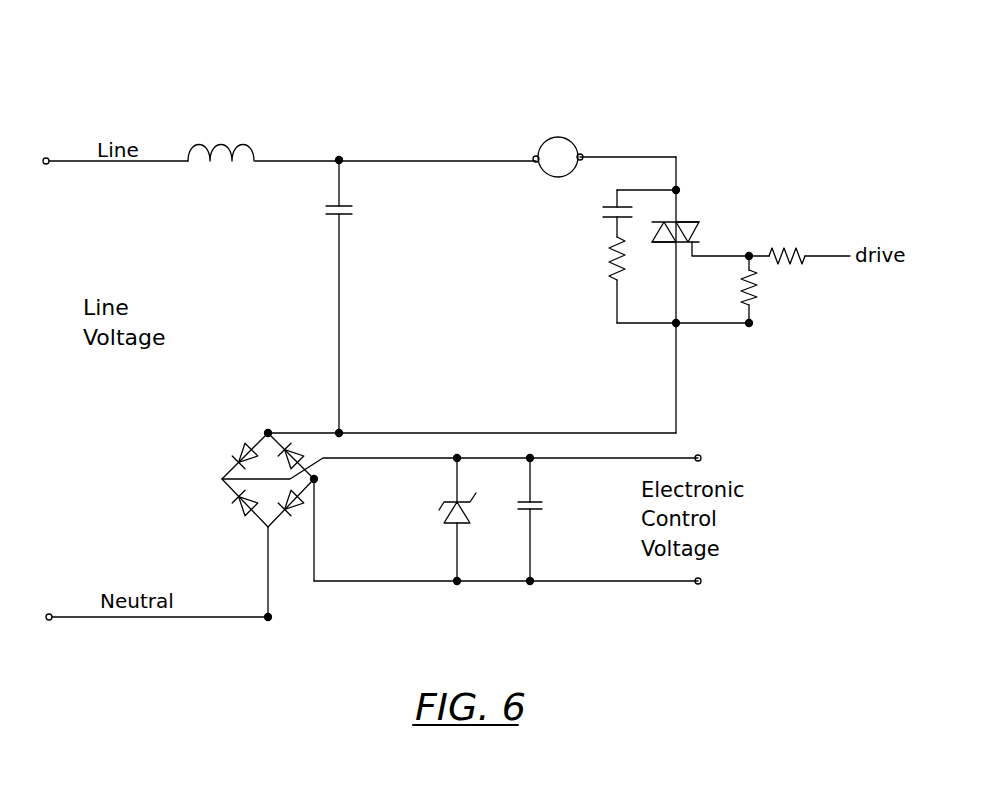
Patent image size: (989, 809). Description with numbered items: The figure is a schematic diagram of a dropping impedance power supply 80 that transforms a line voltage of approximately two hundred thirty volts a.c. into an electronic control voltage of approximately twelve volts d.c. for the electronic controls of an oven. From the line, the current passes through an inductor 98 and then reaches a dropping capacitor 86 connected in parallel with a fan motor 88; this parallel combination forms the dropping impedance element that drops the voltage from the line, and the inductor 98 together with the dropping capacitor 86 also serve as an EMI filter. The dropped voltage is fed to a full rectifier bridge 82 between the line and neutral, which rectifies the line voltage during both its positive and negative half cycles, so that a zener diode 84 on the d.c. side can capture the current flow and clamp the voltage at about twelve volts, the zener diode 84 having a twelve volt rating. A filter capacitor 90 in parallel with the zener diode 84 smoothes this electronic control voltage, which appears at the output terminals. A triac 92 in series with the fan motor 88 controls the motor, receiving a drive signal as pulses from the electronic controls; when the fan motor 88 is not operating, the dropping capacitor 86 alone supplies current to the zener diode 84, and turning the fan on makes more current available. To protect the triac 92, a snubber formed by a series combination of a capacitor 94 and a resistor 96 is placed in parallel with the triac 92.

The dropping impedance power supply 80 is at (623, 47).
The full rectifier bridge 82 is at (267, 433).
The zener diode 84 is at (460, 525).
The dropping capacitor 86 is at (340, 204).
The fan motor 88 is at (558, 137).
The filter capacitor 90 is at (540, 512).
The triac 92 is at (689, 222).
The capacitor 94 is at (605, 219).
The resistor 96 is at (607, 264).
The inductor 98 is at (224, 146).